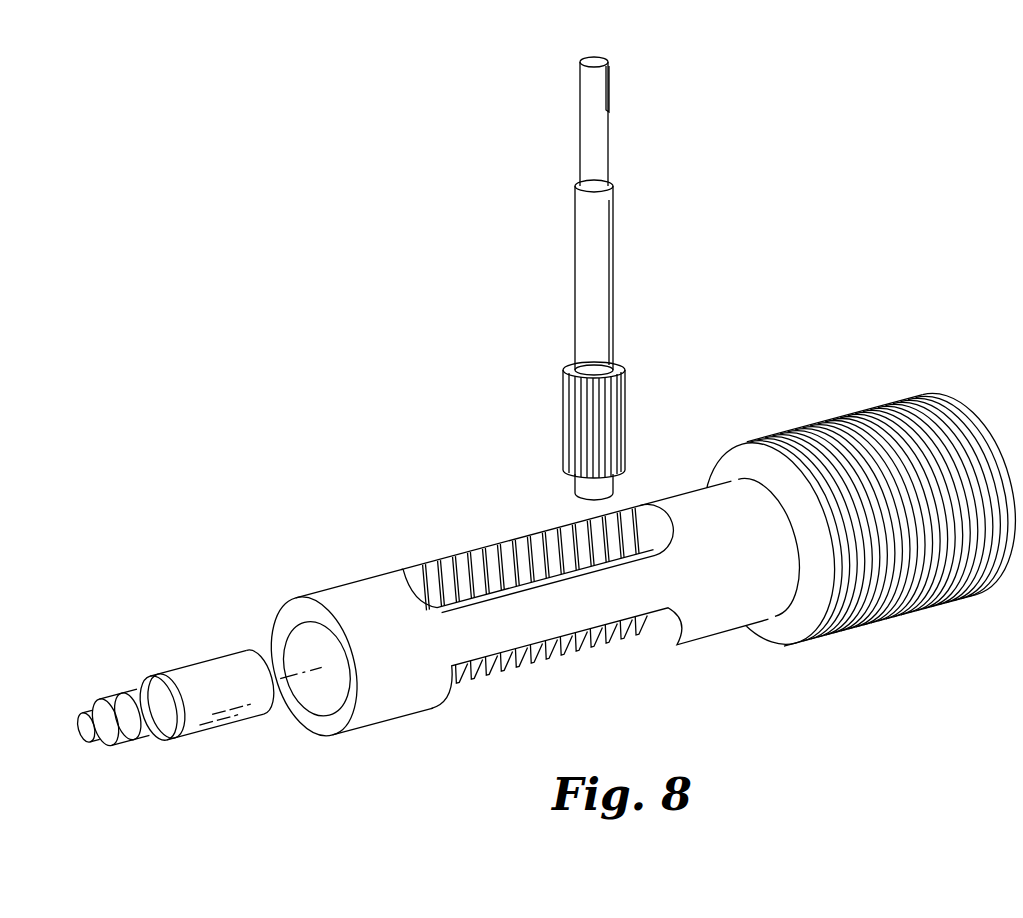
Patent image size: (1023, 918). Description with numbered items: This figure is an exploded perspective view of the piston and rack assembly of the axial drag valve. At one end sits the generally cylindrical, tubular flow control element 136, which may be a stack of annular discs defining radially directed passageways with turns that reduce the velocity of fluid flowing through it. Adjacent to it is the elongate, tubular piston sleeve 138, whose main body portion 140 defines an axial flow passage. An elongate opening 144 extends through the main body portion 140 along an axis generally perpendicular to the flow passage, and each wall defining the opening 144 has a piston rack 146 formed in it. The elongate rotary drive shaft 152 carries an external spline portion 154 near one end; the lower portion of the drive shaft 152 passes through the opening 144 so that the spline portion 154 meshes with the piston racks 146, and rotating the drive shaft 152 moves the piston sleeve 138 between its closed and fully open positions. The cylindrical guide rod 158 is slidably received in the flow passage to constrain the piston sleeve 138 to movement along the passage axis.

The flow control element 136 is at (867, 397).
The piston sleeve 138 is at (659, 490).
The main body portion 140 is at (364, 588).
The elongate opening 144 is at (510, 544).
The piston rack 146 is at (604, 632).
The rotary drive shaft 152 is at (625, 280).
The external spline portion 154 is at (571, 390).
The guide rod 158 is at (193, 668).